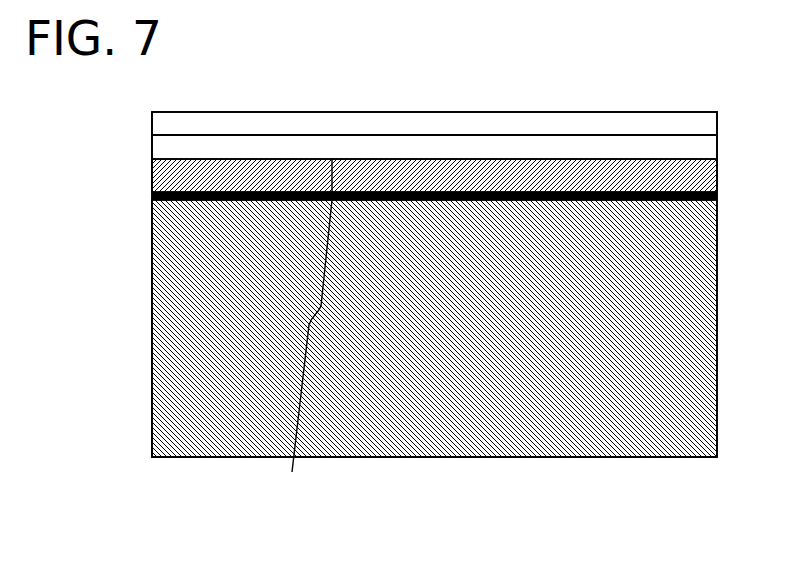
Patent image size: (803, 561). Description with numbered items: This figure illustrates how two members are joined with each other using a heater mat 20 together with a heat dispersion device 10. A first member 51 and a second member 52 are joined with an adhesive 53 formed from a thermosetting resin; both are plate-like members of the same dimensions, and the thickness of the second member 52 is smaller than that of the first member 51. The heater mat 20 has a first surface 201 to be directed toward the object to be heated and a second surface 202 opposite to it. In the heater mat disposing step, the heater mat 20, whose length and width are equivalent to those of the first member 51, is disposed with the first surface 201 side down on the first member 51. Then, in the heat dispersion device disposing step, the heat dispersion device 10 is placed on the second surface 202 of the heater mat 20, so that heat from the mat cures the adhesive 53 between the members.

The heat dispersion device 10 is at (378, 112).
The heater mat 20 is at (437, 135).
The second surface 202 is at (280, 135).
The first member 51 is at (553, 159).
The adhesive 53 is at (637, 192).
The second member 52 is at (633, 457).
The first surface 201 is at (304, 330).